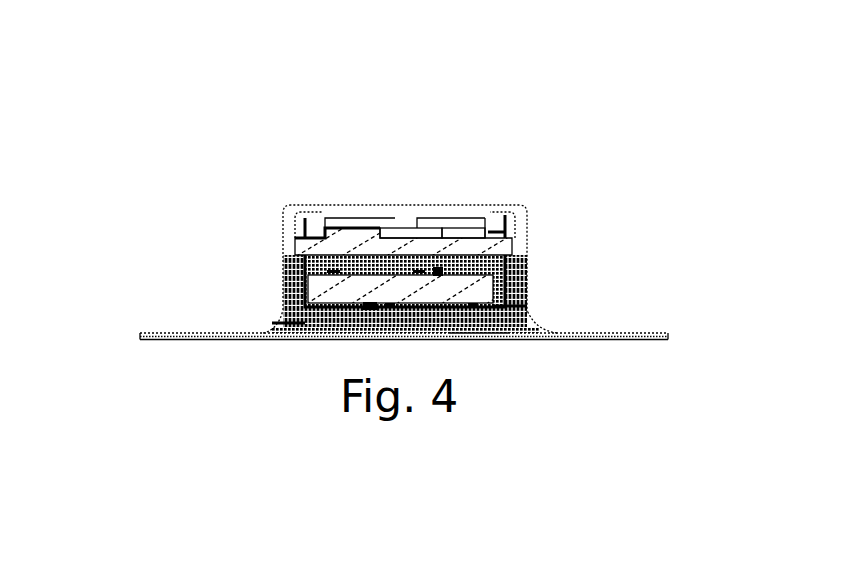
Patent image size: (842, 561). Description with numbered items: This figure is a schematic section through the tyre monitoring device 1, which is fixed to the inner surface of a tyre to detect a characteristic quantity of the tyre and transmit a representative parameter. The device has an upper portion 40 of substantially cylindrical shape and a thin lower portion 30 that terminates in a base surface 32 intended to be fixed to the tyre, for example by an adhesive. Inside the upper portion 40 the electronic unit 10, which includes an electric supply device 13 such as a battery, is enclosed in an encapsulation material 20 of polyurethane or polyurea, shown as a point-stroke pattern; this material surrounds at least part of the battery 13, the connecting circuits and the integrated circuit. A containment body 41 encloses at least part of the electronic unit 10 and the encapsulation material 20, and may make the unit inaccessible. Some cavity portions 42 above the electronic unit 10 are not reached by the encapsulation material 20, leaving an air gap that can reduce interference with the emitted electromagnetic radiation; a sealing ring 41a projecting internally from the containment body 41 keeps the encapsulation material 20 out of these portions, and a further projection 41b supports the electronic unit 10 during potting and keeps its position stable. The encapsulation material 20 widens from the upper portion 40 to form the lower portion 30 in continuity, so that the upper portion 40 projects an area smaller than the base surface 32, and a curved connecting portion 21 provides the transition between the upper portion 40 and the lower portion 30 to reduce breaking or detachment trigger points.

The tyre monitoring device 1 is at (646, 173).
The electronic unit 10 is at (350, 243).
The electric supply device 13 is at (487, 298).
The encapsulation material 20 is at (277, 322).
The connecting portion 21 is at (530, 322).
The lower portion 30 is at (562, 337).
The base surface 32 is at (477, 337).
The upper portion 40 is at (298, 283).
The containment body 41 is at (447, 212).
The sealing ring 41a is at (318, 237).
The further projection 41b is at (403, 223).
The cavity portions 42 is at (362, 220).